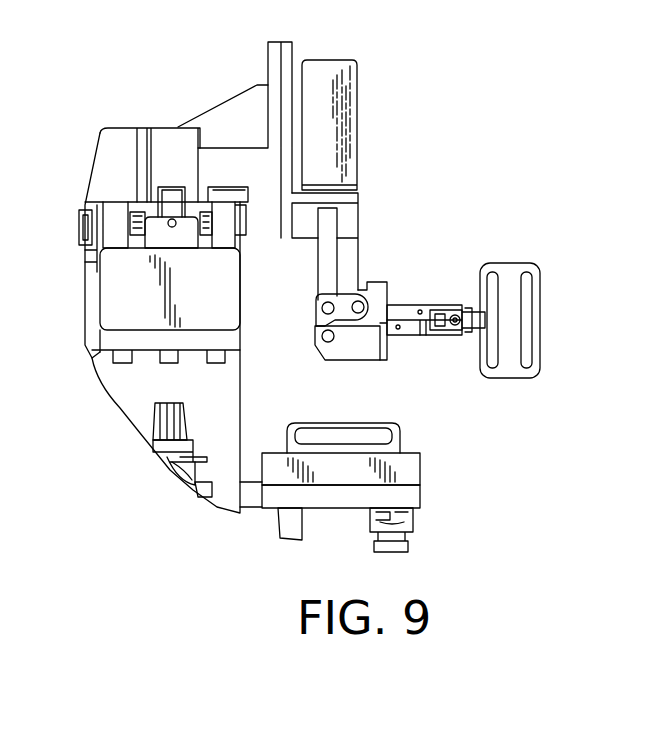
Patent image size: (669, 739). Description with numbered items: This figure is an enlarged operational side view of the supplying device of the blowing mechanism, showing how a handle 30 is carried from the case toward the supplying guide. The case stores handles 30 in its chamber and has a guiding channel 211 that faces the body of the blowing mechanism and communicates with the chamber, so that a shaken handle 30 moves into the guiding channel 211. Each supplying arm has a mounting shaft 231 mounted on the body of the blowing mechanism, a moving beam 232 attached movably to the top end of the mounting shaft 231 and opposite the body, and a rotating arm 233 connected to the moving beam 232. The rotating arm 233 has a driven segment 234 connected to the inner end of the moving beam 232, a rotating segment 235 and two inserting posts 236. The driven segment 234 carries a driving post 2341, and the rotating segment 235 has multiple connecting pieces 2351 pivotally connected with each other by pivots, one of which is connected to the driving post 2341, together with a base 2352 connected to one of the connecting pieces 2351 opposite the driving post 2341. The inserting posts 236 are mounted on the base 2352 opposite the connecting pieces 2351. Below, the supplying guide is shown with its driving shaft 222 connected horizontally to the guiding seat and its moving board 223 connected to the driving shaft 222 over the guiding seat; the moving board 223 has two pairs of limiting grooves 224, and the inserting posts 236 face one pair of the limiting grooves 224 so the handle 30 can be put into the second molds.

The handle 30 is at (426, 433).
The guiding channel 211 is at (247, 495).
The driving shaft 222 is at (292, 527).
The moving board 223 is at (407, 497).
The limiting grooves 224 is at (412, 465).
The mounting shaft 231 is at (145, 382).
The moving beam 232 is at (100, 170).
The rotating arm 233 is at (556, 306).
The driven segment 234 is at (345, 102).
The driving post 2341 is at (327, 232).
The rotating segment 235 is at (308, 333).
The connecting pieces 2351 is at (340, 350).
The base 2352 is at (385, 283).
The inserting posts 236 is at (455, 308).